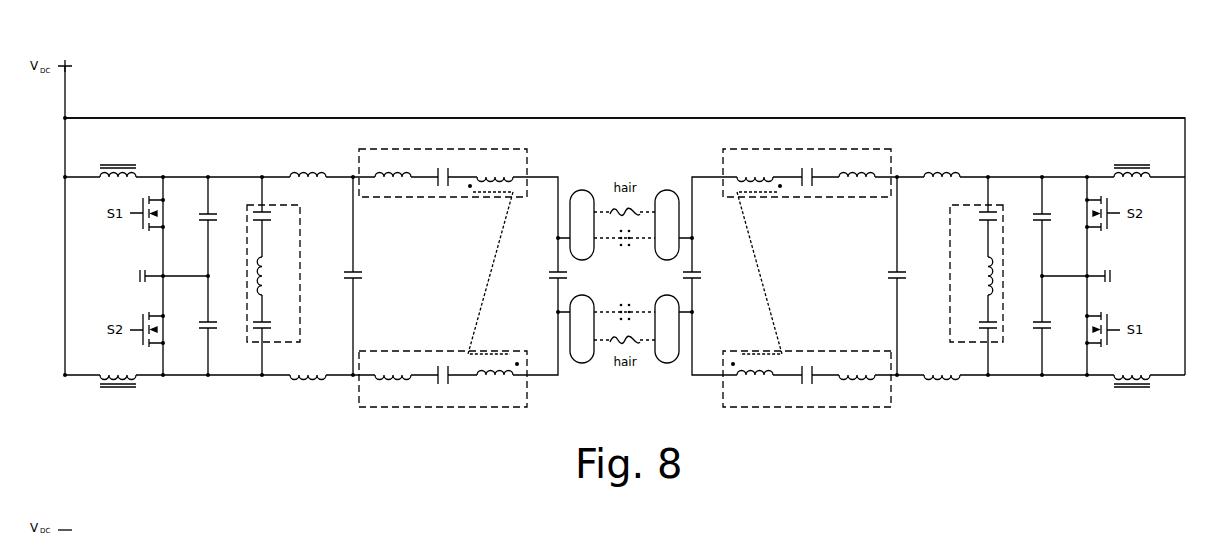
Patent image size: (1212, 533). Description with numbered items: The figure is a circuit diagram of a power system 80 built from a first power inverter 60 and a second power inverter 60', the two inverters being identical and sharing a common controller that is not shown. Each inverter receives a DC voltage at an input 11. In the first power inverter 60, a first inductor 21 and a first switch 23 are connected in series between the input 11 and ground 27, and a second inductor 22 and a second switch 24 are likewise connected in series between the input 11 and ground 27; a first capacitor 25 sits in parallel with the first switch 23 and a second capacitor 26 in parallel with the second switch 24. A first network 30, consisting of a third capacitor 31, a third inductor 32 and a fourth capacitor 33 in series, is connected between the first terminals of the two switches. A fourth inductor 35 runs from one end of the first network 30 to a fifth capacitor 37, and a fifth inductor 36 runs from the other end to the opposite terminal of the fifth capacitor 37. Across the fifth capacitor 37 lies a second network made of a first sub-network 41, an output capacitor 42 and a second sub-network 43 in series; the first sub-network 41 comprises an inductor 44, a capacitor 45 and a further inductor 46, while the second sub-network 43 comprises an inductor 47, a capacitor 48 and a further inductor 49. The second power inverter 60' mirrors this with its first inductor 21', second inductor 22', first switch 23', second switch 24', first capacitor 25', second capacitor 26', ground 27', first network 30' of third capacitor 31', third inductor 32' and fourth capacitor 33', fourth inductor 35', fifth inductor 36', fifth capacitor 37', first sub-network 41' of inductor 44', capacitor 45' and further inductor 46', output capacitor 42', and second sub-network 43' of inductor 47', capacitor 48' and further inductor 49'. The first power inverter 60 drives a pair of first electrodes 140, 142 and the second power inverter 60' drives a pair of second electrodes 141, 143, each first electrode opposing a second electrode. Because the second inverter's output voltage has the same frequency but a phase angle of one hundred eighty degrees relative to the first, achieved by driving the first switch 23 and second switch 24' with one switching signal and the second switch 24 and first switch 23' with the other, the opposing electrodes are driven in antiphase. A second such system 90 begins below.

The input 11 is at (68, 64).
The first inductor 21 is at (118, 162).
The second inductor 22 is at (118, 391).
The first switch 23 is at (159, 213).
The second switch 24 is at (159, 329).
The first capacitor 25 is at (216, 217).
The second capacitor 26 is at (216, 325).
The ground 27 is at (138, 276).
The first network 30 is at (292, 273).
The third capacitor 31 is at (271, 217).
The third inductor 32 is at (273, 276).
The fourth capacitor 33 is at (271, 326).
The fourth inductor 35 is at (308, 162).
The fifth inductor 36 is at (308, 391).
The fifth capacitor 37 is at (361, 276).
The first sub-network 41 is at (443, 143).
The output capacitor 42 is at (549, 276).
The second sub-network 43 is at (443, 398).
The inductor 44 is at (393, 164).
The capacitor 45 is at (443, 169).
The further inductor 46 is at (490, 170).
The inductor 47 is at (393, 389).
The capacitor 48 is at (443, 384).
The further inductor 49 is at (498, 379).
The first power inverter 60 is at (169, 421).
The power system 80 is at (1045, 86).
The second electrode drive circuit 90 is at (1061, 532).
The first electrode 140 is at (582, 190).
The second electrode 141 is at (667, 190).
The first electrode 142 is at (582, 363).
The second electrode 143 is at (667, 363).
The first inductor 21' is at (1132, 162).
The second inductor 22' is at (1132, 391).
The first switch 23' is at (1090, 213).
The second switch 24' is at (1090, 329).
The first capacitor 25' is at (1032, 217).
The second capacitor 26' is at (1032, 325).
The ground 27' is at (1112, 276).
The first network 30' is at (956, 273).
The third capacitor 31' is at (977, 217).
The third inductor 32' is at (975, 276).
The fourth capacitor 33' is at (977, 326).
The fourth inductor 35' is at (942, 162).
The fifth inductor 36' is at (942, 391).
The fifth capacitor 37' is at (887, 276).
The first sub-network 41' is at (807, 143).
The output capacitor 42' is at (701, 276).
The second sub-network 43' is at (807, 398).
The inductor 44' is at (857, 164).
The capacitor 45' is at (807, 169).
The further inductor 46' is at (759, 170).
The inductor 47' is at (857, 389).
The capacitor 48' is at (807, 384).
The further inductor 49' is at (752, 379).
The second power inverter 60' is at (1081, 421).